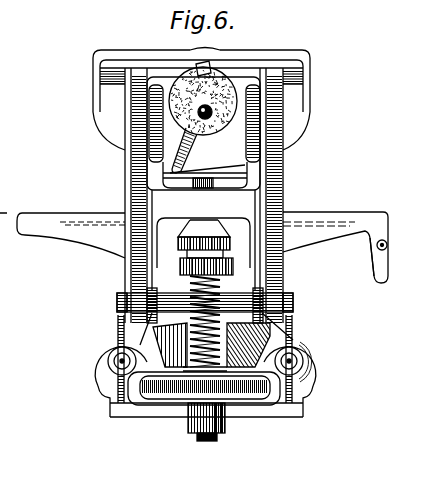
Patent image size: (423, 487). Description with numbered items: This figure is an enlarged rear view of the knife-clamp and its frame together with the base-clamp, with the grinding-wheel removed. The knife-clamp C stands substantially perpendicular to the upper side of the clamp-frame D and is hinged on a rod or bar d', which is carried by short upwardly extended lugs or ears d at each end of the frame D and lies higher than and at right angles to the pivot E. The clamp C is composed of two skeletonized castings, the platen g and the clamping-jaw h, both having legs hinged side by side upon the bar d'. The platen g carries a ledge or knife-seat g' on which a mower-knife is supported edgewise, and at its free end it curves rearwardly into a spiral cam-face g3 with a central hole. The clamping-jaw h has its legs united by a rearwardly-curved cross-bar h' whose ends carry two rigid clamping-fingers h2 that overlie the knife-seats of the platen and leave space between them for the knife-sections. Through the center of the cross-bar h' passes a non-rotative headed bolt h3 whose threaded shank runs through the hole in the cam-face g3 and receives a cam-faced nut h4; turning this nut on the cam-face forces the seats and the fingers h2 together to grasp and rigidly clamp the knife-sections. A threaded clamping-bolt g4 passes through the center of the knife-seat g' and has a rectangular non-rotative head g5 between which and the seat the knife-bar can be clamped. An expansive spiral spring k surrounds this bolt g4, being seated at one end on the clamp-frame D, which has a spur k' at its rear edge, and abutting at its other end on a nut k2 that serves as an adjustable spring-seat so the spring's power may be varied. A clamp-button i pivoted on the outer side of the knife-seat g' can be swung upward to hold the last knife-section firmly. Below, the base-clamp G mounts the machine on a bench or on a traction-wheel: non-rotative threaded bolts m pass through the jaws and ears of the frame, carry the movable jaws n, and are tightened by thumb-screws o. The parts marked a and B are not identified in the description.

The knife-clamp C is at (211, 99).
The clamping-jaw h is at (201, 49).
The cross-bar h' is at (201, 68).
The clamping-fingers h2 is at (203, 96).
The headed bolt h3 is at (211, 119).
The cam-faced nut h4 is at (197, 97).
The platen g is at (141, 195).
The knife-seat g' is at (335, 237).
The spiral cam-face g3 is at (194, 66).
The clamping-bolt g4 is at (211, 282).
The bolt-head g5 is at (207, 150).
The clamp-button i is at (383, 257).
The expansive spiral spring k is at (211, 320).
The spur k' is at (193, 323).
The nut k2 is at (213, 247).
The lugs or ears d is at (205, 302).
The rod or bar d' is at (217, 302).
The clamp nuts a is at (284, 297).
The thumb-screw o is at (204, 357).
The threaded bolt m is at (322, 368).
The clamp-frame D is at (214, 365).
The base-clamp G is at (224, 389).
The movable jaws n is at (310, 414).
The boss B is at (225, 418).
The pivot E is at (208, 447).